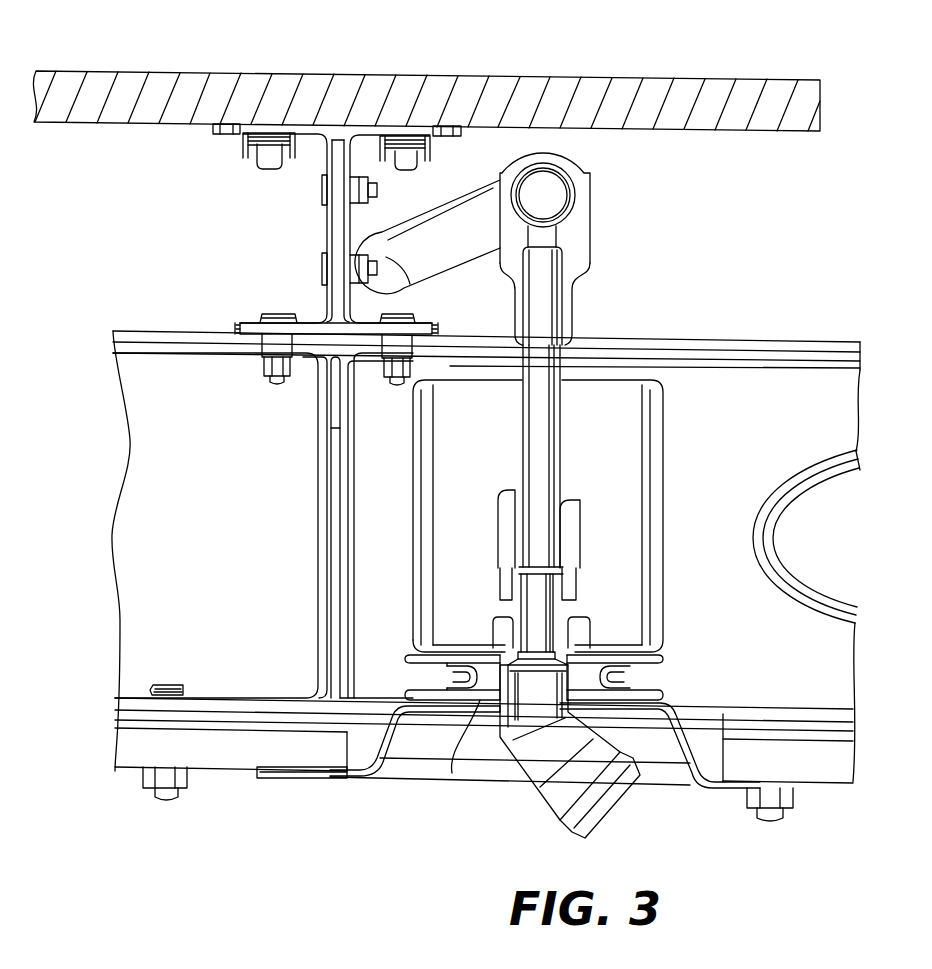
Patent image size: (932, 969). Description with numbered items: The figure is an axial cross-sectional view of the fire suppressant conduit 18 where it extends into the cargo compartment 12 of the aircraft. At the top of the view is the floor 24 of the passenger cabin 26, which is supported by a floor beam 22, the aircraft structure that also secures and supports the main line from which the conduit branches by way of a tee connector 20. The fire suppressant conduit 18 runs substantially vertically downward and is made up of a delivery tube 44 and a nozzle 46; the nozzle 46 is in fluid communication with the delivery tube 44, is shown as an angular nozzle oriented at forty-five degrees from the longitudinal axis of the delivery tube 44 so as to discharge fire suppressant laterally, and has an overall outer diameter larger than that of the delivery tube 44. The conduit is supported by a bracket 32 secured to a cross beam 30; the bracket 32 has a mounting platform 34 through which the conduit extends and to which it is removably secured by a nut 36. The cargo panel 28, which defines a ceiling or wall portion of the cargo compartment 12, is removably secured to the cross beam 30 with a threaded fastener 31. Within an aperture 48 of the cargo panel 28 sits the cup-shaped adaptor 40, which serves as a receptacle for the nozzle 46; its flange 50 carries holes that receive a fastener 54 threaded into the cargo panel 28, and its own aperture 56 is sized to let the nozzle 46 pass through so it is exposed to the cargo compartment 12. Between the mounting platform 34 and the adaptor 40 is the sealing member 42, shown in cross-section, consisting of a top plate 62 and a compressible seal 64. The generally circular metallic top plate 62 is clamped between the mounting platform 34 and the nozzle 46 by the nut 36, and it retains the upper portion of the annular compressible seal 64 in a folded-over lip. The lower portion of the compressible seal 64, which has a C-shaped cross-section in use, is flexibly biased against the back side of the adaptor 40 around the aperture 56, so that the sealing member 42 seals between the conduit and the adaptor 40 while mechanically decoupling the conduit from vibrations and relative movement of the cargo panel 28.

The cargo compartment 12 is at (224, 900).
The fire suppressant conduit 18 is at (578, 323).
The tee connector 20 is at (592, 181).
The floor beam 22 is at (324, 221).
The floor 24 is at (814, 106).
The passenger cabin 26 is at (436, 35).
The cargo panel 28 is at (856, 762).
The cross beam 30 is at (853, 345).
The threaded fastener 31 is at (165, 800).
The bracket 32 is at (665, 428).
The mounting platform 34 is at (622, 652).
The nut 36 is at (588, 618).
The adaptor 40 is at (364, 778).
The sealing member 42 is at (657, 687).
The delivery tube 44 is at (545, 386).
The nozzle 46 is at (520, 760).
The aperture 48 is at (723, 724).
The flange 50 is at (302, 778).
The fastener 54 is at (768, 822).
The aperture 56 is at (431, 713).
The top plate 62 is at (420, 657).
The compressible seal 64 is at (433, 693).